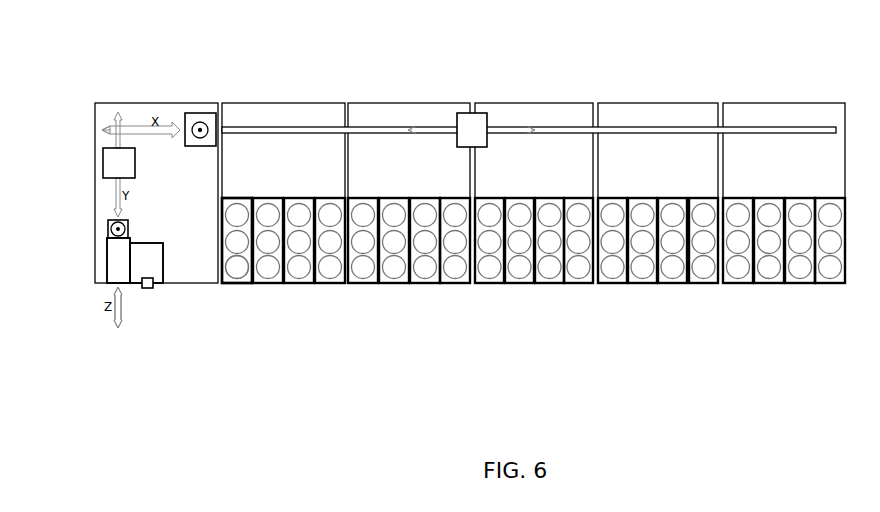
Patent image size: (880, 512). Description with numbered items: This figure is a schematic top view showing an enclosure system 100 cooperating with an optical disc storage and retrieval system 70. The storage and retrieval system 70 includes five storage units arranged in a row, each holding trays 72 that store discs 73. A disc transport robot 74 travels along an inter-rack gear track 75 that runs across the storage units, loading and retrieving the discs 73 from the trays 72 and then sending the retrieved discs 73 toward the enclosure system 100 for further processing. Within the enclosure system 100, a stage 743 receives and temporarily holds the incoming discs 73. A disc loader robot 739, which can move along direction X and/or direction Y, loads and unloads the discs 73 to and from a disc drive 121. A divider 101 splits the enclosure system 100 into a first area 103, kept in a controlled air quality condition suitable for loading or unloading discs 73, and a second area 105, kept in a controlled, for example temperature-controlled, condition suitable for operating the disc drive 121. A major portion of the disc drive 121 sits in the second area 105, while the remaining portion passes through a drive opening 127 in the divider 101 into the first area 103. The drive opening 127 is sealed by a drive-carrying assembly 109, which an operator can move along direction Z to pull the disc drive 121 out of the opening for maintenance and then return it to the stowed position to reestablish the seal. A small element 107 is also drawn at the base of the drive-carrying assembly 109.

The optical disc storage and retrieval system 70 is at (545, 88).
The tray 72 is at (245, 289).
The disc 73 is at (231, 275).
The disc transport robot 74 is at (474, 113).
The inter-rack gear track 75 is at (645, 124).
The enclosure system 100 is at (99, 237).
The divider 101 is at (166, 261).
The first area 103 is at (156, 193).
The second area 105 is at (146, 263).
The sensor 107 is at (151, 291).
The drive-carrying assembly 109 is at (98, 309).
The disc drive 121 is at (106, 257).
The drive opening 127 is at (130, 236).
The disc loader robot 739 is at (101, 158).
The stage 743 is at (194, 104).